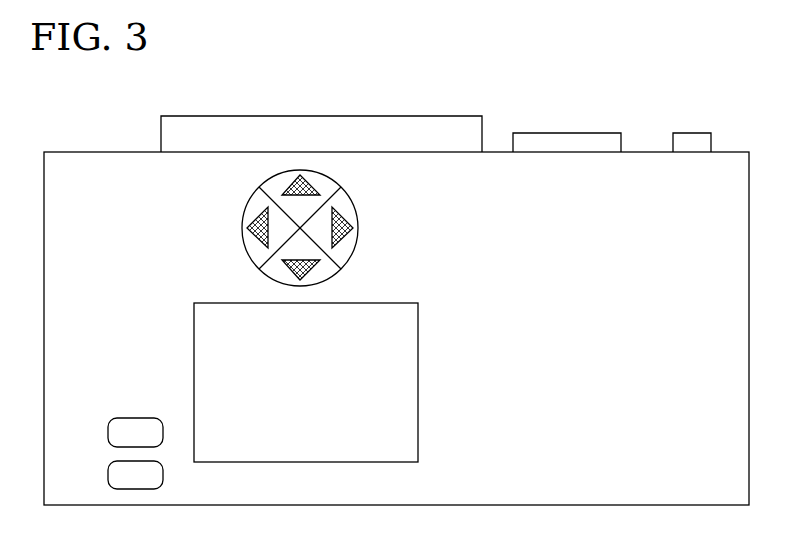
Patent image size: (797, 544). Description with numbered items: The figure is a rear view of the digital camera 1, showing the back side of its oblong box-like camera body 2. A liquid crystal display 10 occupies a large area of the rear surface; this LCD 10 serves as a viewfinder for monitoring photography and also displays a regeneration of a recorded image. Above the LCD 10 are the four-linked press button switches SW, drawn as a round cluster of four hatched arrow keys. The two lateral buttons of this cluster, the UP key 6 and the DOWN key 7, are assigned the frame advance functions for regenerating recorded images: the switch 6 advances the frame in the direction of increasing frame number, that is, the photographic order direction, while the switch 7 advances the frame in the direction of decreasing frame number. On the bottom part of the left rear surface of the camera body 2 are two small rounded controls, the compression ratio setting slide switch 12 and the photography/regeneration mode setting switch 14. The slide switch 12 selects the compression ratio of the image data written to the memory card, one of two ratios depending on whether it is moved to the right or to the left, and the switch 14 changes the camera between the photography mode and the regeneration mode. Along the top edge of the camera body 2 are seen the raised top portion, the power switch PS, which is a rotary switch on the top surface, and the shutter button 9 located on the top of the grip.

The digital camera 1 is at (85, 146).
The camera body 2 is at (429, 152).
The power switch PS is at (567, 133).
The shutter button 9 is at (692, 133).
The four-linked press button switches SW is at (357, 191).
The UP key 6 is at (247, 213).
The DOWN key 7 is at (354, 213).
The liquid crystal display 10 is at (421, 334).
The compression ratio setting slide switch 12 is at (113, 426).
The photography/regeneration mode setting switch 14 is at (113, 470).